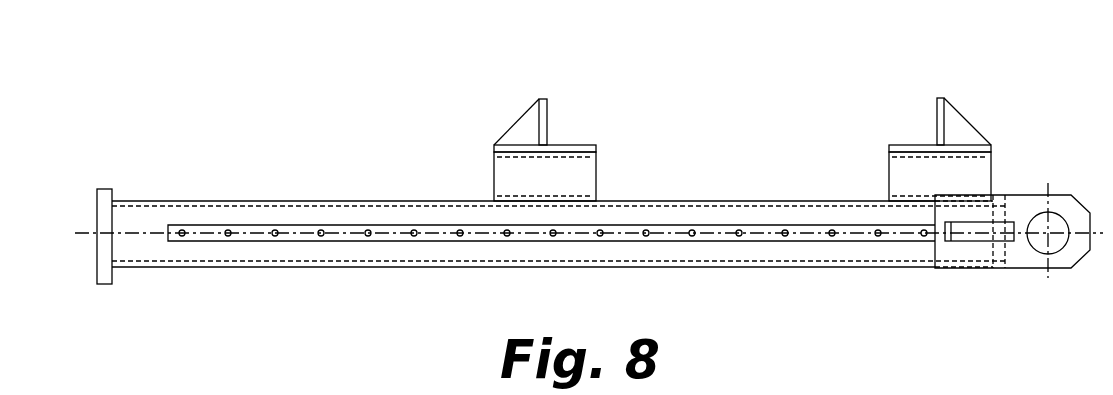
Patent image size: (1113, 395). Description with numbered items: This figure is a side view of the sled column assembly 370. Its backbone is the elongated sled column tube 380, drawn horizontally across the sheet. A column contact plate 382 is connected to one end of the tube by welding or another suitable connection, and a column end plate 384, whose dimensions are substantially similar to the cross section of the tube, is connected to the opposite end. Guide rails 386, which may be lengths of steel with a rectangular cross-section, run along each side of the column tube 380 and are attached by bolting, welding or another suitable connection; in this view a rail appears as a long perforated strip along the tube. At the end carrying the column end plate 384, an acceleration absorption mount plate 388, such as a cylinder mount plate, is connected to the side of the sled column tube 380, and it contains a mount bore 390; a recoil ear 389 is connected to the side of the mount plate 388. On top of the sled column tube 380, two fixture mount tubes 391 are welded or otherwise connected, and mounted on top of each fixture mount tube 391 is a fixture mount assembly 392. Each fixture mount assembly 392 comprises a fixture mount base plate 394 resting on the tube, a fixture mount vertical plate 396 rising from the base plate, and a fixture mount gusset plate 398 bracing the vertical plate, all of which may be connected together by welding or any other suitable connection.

The sled column assembly 370 is at (562, 184).
The sled column tube 380 is at (271, 199).
The column contact plate 382 is at (100, 258).
The column end plate 384 is at (1004, 216).
The guide rails 386 is at (201, 240).
The acceleration absorption mount plates 388 is at (1015, 202).
The recoil ears 389 is at (977, 237).
The mount bores 390 is at (1056, 245).
The fixture mount tubes 391 is at (493, 164).
The fixture mount assembly 392 is at (522, 118).
The fixture mount base plate 394 is at (567, 145).
The fixture mount vertical plate 396 is at (548, 100).
The fixture mount gusset plate 398 is at (527, 112).